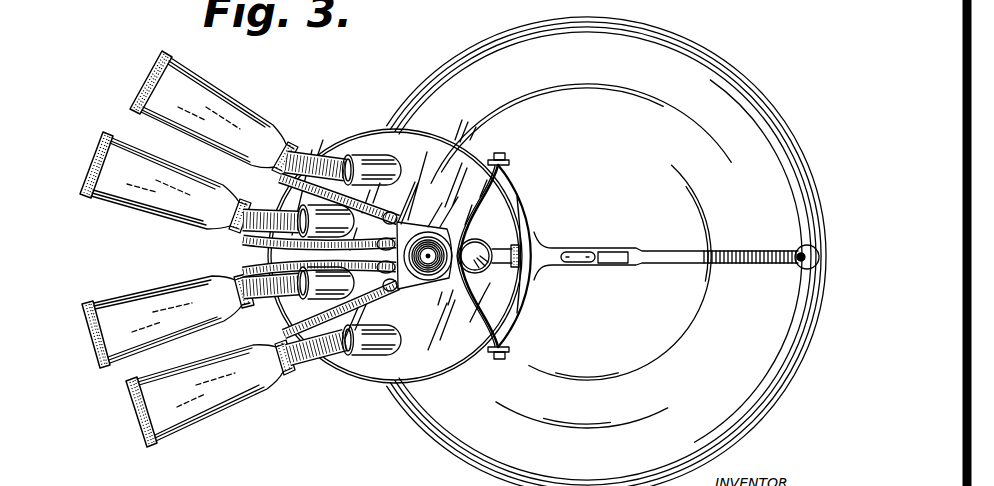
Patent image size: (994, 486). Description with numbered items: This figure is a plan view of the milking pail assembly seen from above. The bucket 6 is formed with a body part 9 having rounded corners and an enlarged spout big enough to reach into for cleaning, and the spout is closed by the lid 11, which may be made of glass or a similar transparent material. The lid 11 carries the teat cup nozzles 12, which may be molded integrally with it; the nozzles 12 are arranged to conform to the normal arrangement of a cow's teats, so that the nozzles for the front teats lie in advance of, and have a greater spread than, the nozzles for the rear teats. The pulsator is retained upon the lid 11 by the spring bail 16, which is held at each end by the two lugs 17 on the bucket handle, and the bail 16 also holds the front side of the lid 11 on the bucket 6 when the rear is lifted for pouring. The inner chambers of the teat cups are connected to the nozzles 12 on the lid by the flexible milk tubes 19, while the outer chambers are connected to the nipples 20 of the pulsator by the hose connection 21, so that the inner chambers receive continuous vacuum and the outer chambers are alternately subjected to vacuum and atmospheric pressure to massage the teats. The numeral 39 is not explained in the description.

The bucket 6 is at (676, 246).
The body part 9 is at (606, 244).
The lid 11 is at (403, 146).
The teat cup nozzles 12 is at (322, 160).
The spring bail 16 is at (494, 256).
The lugs 17 is at (507, 157).
The flexible milk tubes 19 is at (290, 146).
The nipples 20 is at (404, 219).
The hose connection 21 is at (242, 272).
The adjusting nut 39 is at (519, 252).